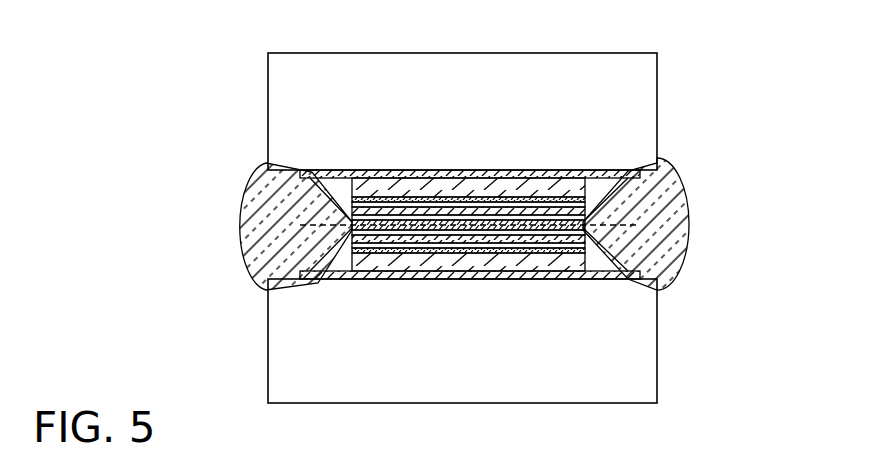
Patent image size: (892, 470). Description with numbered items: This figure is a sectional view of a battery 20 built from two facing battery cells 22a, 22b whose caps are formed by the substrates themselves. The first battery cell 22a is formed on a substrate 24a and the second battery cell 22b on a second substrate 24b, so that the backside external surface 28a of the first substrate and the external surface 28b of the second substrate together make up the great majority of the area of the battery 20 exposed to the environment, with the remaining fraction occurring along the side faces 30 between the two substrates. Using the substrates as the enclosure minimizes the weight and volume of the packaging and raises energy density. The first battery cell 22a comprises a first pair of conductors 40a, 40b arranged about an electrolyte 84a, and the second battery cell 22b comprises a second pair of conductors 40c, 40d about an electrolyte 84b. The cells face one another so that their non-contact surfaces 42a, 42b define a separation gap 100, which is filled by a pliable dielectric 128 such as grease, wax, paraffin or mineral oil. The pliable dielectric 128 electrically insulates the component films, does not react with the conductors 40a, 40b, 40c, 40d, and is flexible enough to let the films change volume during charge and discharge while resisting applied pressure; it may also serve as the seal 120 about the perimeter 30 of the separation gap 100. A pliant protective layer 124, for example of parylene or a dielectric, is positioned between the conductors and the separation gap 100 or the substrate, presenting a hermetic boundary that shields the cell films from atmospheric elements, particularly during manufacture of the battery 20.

The battery 20 is at (140, 60).
The side faces 30 is at (208, 222).
The external surface 28a is at (314, 53).
The external surface 28b is at (538, 403).
The substrate 24a is at (487, 86).
The second substrate 24b is at (487, 392).
The seal 120 is at (252, 197).
The protective layer 124 is at (325, 250).
The conductor 40a is at (600, 195).
The conductor 40b is at (518, 160).
The conductor 40c is at (598, 250).
The conductor 40d is at (533, 255).
The non-contact surface 42a is at (410, 197).
The non-contact surface 42b is at (335, 270).
The electrolyte 84a is at (500, 200).
The electrolyte 84b is at (485, 260).
The pliable dielectric 128 is at (441, 215).
The separation gap 100 is at (405, 250).
The first battery cell 22a is at (600, 213).
The second battery cell 22b is at (600, 237).